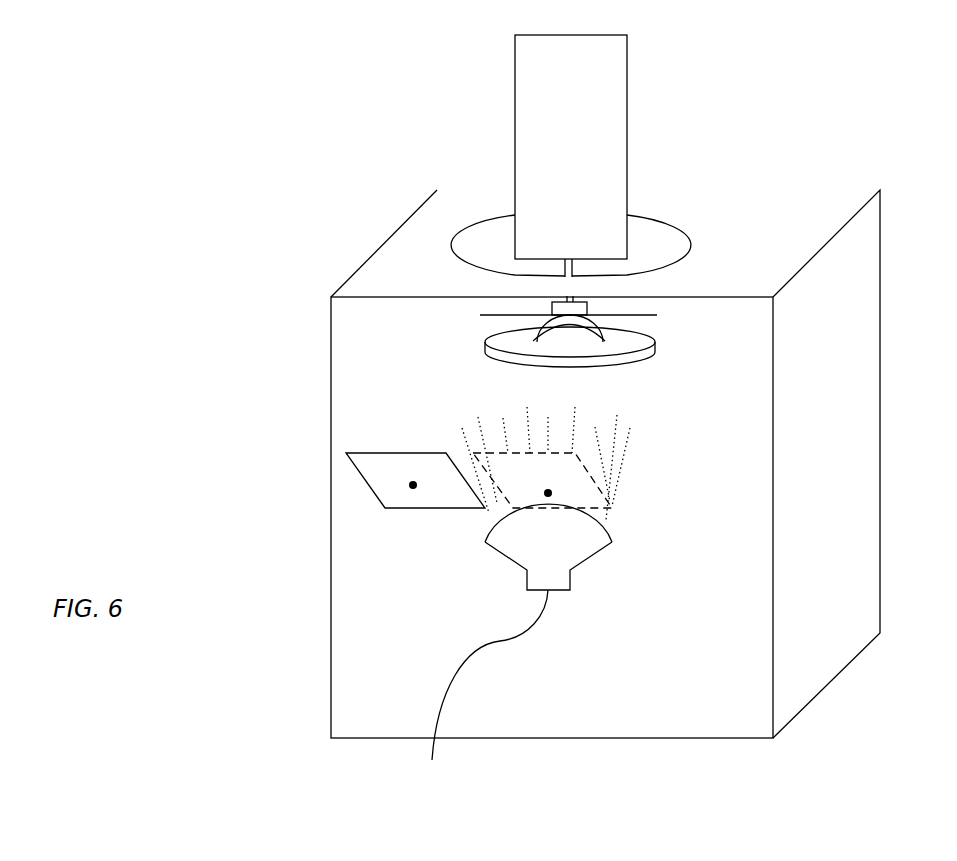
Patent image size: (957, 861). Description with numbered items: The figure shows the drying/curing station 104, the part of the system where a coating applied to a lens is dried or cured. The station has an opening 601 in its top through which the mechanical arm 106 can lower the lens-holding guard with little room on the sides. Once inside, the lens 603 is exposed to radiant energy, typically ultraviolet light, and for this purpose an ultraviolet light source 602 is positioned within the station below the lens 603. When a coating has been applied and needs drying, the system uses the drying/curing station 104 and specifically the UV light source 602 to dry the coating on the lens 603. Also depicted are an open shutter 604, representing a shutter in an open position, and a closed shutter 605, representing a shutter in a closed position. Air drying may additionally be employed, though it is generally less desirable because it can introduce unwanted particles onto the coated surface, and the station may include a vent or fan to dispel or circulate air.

The drying/curing station 104 is at (705, 765).
The mechanical arm 106 is at (495, 127).
The opening 601 is at (655, 220).
The ultraviolet light source 602 is at (485, 542).
The lens 603 is at (658, 340).
The open shutter 604 is at (409, 485).
The closed shutter 605 is at (552, 493).